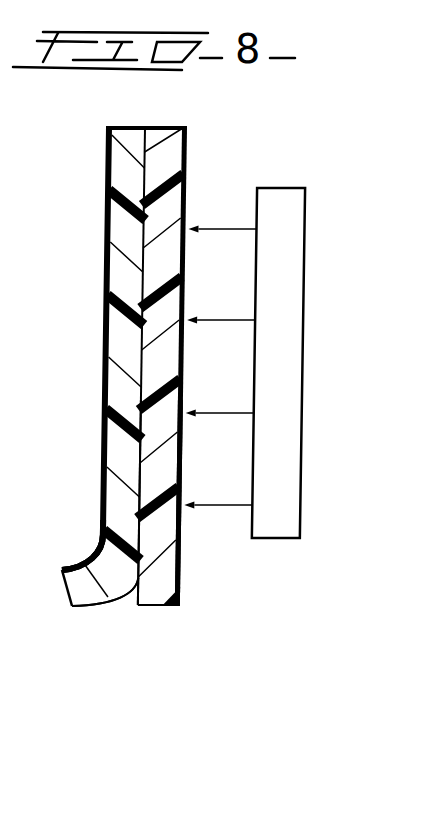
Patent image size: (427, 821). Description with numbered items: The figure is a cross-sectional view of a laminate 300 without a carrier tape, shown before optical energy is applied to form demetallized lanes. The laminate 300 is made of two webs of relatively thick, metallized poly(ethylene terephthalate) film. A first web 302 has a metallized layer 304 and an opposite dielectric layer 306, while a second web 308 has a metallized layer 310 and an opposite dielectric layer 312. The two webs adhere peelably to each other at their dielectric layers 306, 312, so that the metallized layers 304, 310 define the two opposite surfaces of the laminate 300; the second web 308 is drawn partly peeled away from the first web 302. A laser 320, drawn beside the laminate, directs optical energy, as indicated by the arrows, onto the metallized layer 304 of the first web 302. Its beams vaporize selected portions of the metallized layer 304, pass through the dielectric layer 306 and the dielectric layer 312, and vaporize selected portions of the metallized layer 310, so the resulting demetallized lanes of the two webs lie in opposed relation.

The laminate 300 is at (93, 212).
The first web 302 is at (168, 621).
The metallized layer 304 is at (178, 567).
The dielectric layer 306 is at (137, 590).
The second web 308 is at (58, 614).
The metallized layer 310 is at (86, 563).
The dielectric layer 312 is at (89, 601).
The laser 320 is at (257, 210).